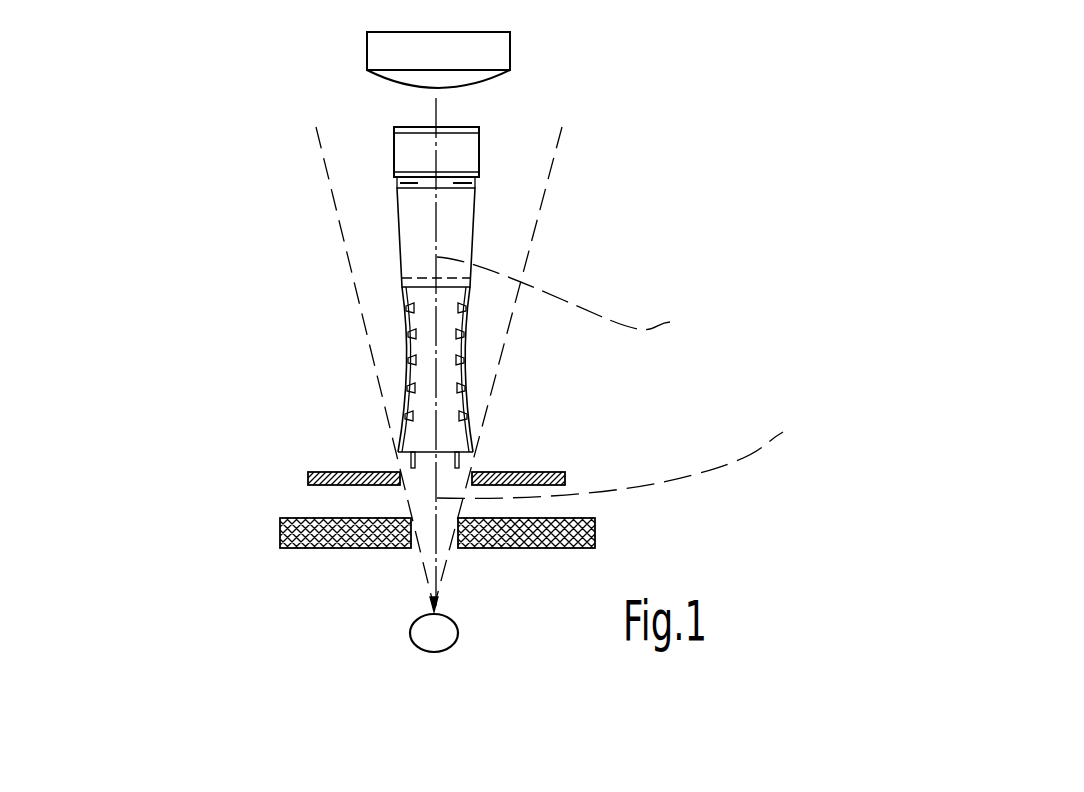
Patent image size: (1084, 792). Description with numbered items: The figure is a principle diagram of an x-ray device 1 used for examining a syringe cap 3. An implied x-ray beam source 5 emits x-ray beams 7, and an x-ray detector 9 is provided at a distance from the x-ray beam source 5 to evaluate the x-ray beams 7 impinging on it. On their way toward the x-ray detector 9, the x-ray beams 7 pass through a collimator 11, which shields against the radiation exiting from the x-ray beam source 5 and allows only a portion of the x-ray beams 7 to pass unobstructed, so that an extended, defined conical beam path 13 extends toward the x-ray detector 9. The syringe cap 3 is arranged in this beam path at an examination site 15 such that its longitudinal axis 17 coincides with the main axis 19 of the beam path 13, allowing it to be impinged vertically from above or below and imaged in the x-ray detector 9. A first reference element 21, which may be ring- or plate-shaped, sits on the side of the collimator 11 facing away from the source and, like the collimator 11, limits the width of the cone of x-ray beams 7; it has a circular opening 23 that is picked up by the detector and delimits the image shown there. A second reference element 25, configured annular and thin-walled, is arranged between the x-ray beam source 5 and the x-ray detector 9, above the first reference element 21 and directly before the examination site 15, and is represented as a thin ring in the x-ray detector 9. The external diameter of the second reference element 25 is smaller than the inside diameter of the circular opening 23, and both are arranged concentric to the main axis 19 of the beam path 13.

The x-ray device 1 is at (210, 377).
The syringe cap 3 is at (484, 229).
The x-ray beam source 5 is at (455, 640).
The x-ray beams 7 is at (443, 580).
The x-ray detector 9 is at (513, 47).
The collimator 11 is at (595, 538).
The beam path 13 is at (533, 235).
The examination site 15 is at (388, 277).
The longitudinal axis 17 is at (568, 295).
The main axis 19 is at (623, 452).
The first reference element 21 is at (308, 481).
The circular opening 23 is at (400, 477).
The second reference element 25 is at (411, 460).